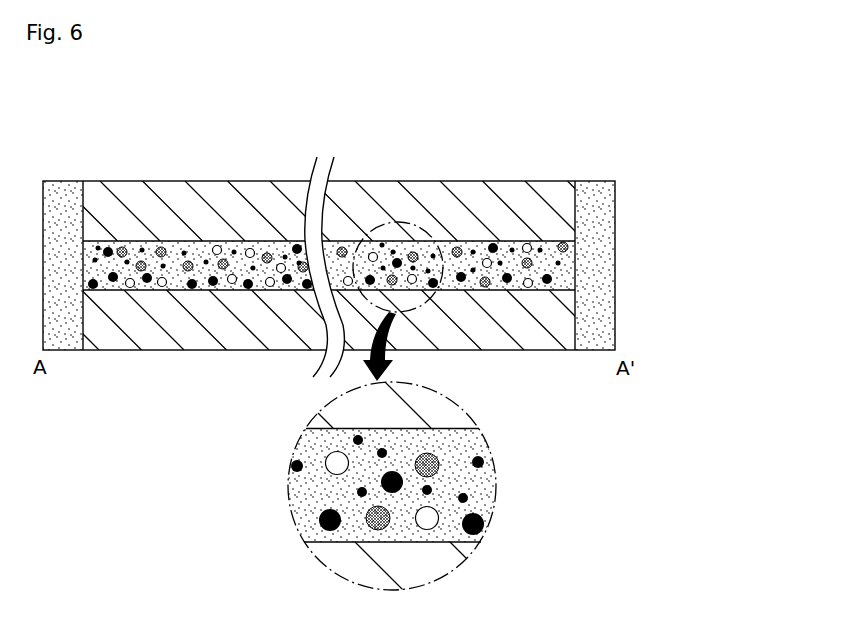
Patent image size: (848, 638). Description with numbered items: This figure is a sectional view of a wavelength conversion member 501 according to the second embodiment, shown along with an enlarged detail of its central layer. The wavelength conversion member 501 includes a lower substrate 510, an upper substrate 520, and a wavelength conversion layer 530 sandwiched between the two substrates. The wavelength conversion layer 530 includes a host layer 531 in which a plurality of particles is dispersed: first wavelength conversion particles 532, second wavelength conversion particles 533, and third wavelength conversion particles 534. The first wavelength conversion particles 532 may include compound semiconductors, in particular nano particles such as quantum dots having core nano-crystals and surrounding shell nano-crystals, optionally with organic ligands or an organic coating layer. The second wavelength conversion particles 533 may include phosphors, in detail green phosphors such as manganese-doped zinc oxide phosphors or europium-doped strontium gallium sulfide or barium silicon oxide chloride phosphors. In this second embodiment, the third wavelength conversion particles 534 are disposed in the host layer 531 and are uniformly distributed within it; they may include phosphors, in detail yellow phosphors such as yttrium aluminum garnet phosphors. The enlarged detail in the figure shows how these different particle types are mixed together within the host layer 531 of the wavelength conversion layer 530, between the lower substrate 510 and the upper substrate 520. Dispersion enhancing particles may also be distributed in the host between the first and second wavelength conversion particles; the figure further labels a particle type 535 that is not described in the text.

The wavelength conversion member 501 is at (95, 82).
The lower substrate 510 is at (563, 325).
The upper substrate 520 is at (562, 210).
The wavelength conversion layer 530 is at (687, 219).
The host layer 531 is at (563, 276).
The first wavelength conversion particles 532 is at (541, 251).
The second wavelength conversion particles 533 is at (553, 282).
The third wavelength conversion particles 534 is at (541, 267).
The hollow particles 535 is at (568, 246).